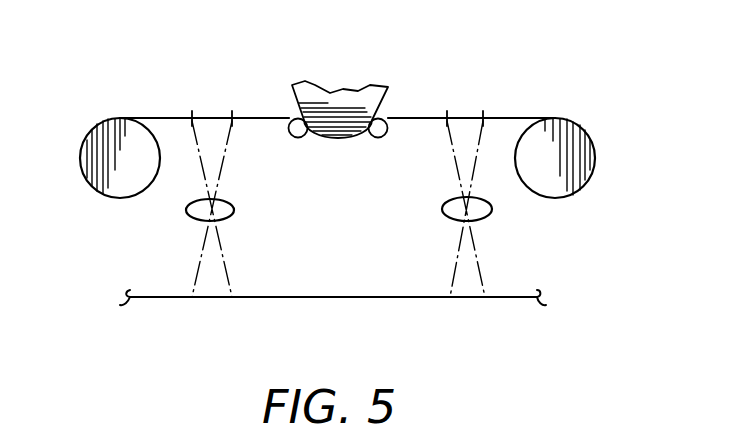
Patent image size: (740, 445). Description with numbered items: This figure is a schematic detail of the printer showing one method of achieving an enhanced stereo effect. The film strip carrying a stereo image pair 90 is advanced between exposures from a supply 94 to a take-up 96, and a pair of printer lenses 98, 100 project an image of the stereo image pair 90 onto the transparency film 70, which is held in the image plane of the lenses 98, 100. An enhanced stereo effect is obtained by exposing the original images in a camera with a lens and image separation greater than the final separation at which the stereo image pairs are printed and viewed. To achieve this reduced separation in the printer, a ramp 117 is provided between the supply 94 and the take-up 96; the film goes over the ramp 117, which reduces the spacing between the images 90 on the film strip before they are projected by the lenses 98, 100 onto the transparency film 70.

The transparency film 70 is at (352, 298).
The stereo image pair 90 is at (215, 116).
The supply 94 is at (100, 142).
The take-up 96 is at (580, 140).
The printer lens 98 is at (233, 210).
The printer lens 100 is at (442, 209).
The ramp 117 is at (358, 98).